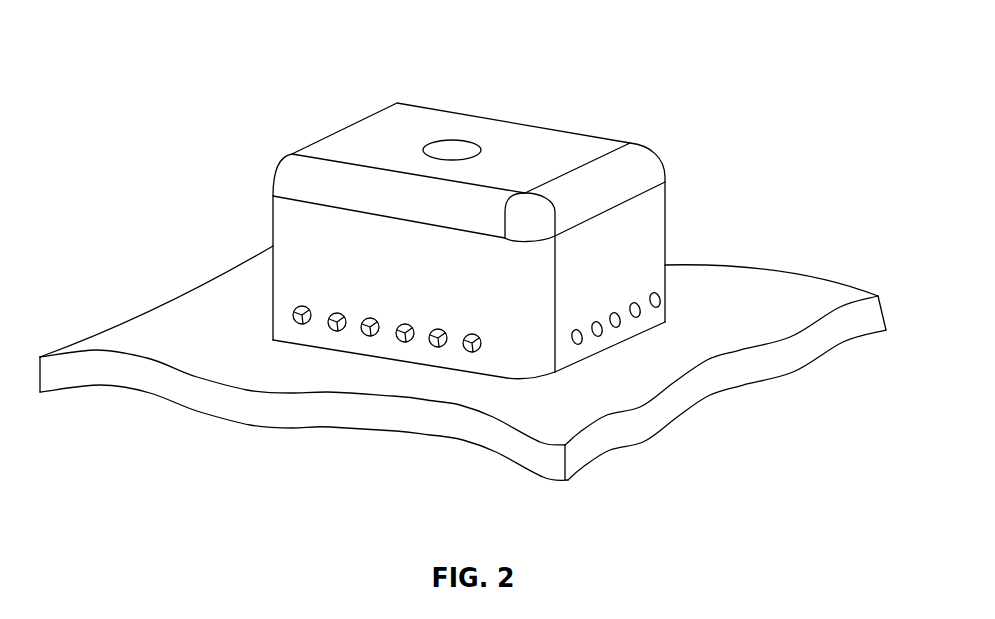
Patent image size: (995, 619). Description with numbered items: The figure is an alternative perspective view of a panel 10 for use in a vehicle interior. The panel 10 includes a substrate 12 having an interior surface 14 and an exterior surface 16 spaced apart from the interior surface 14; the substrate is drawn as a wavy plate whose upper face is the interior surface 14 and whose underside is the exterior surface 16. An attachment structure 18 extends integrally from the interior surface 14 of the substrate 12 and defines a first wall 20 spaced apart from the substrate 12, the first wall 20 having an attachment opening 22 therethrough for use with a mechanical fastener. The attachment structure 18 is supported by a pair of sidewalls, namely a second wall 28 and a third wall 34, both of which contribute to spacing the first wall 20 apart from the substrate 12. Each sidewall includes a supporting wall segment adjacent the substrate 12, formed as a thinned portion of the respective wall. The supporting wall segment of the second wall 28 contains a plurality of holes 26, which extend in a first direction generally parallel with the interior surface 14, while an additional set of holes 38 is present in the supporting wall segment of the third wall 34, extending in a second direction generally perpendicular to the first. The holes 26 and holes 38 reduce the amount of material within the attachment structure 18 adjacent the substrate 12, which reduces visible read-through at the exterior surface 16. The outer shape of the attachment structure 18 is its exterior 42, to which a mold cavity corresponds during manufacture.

The panel 10 is at (95, 295).
The substrate 12 is at (463, 365).
The interior surface 14 is at (201, 418).
The exterior surface 16 is at (163, 320).
The attachment structure 18 is at (461, 232).
The first wall 20 is at (461, 120).
The attachment opening 22 is at (467, 146).
The holes 26 is at (580, 344).
The second wall 28 is at (649, 296).
The third wall 34 is at (414, 327).
The additional set of holes 38 is at (297, 323).
The exterior 42 is at (640, 219).